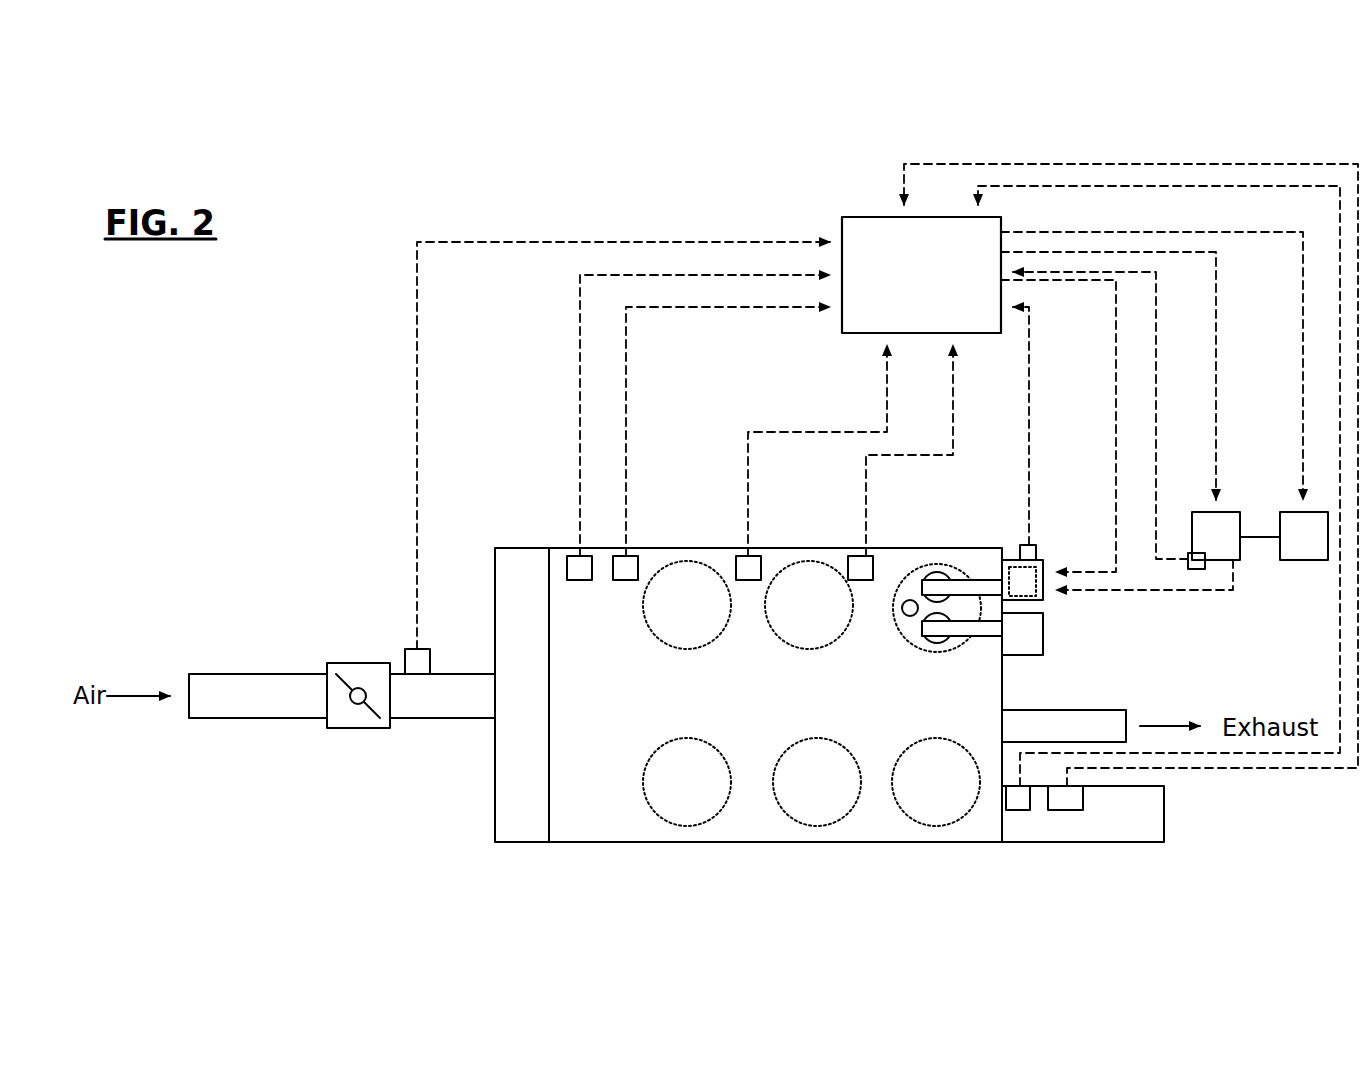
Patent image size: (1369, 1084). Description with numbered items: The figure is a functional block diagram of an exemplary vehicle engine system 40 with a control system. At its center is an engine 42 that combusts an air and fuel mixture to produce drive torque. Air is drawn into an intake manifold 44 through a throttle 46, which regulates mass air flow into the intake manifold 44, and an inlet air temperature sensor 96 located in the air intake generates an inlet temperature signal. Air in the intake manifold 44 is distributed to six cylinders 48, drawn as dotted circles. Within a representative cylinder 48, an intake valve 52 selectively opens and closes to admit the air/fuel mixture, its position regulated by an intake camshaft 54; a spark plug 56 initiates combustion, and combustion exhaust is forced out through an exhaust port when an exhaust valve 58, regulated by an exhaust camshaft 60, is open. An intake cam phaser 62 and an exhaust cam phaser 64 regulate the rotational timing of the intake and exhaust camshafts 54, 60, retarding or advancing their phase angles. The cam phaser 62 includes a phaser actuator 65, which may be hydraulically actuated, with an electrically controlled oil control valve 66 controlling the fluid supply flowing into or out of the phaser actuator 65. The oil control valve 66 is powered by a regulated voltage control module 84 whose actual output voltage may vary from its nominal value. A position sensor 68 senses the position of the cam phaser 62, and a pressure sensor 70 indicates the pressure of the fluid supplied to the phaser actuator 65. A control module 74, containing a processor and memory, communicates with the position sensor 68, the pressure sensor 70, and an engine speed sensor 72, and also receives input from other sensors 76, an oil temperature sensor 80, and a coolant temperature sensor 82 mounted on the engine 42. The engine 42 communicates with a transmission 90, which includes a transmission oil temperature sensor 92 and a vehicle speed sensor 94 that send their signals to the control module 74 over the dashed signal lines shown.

The engine system 40 is at (694, 114).
The engine 42 is at (963, 842).
The intake manifold 44 is at (522, 842).
The throttle 46 is at (380, 728).
The cylinders 48 is at (920, 650).
The intake valve 52 is at (927, 574).
The intake camshaft 54 is at (980, 580).
The spark plug 56 is at (907, 616).
The exhaust valve 58 is at (938, 643).
The exhaust camshaft 60 is at (993, 636).
The intake cam phaser 62 is at (1043, 562).
The exhaust cam phaser 64 is at (1040, 655).
The phaser actuator 65 is at (1043, 598).
The oil control valve 66 is at (1230, 513).
The position sensor 68 is at (1020, 548).
The pressure sensor 70 is at (1192, 553).
The engine speed sensor 72 is at (574, 556).
The control module 74 is at (856, 217).
The other sensors 76 is at (752, 556).
The oil temperature sensor 80 is at (630, 556).
The coolant temperature sensor 82 is at (864, 556).
The regulated voltage control module 84 is at (1293, 560).
The transmission 90 is at (1130, 842).
The transmission oil temperature sensor 92 is at (1018, 808).
The vehicle speed sensor 94 is at (1083, 796).
The inlet air temperature sensor 96 is at (425, 660).